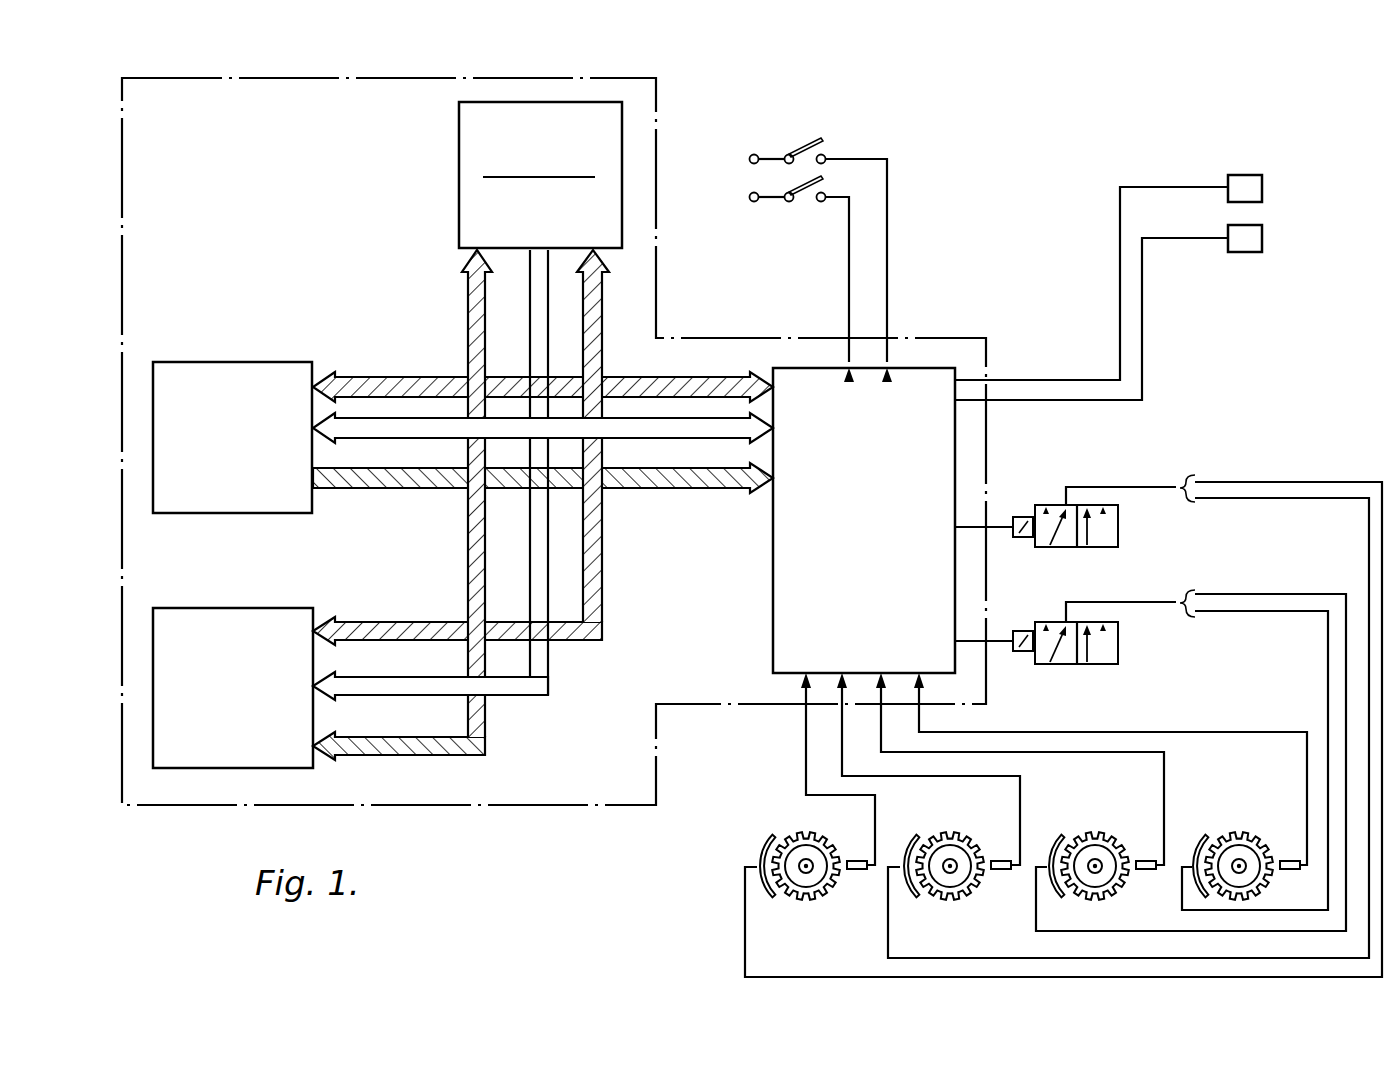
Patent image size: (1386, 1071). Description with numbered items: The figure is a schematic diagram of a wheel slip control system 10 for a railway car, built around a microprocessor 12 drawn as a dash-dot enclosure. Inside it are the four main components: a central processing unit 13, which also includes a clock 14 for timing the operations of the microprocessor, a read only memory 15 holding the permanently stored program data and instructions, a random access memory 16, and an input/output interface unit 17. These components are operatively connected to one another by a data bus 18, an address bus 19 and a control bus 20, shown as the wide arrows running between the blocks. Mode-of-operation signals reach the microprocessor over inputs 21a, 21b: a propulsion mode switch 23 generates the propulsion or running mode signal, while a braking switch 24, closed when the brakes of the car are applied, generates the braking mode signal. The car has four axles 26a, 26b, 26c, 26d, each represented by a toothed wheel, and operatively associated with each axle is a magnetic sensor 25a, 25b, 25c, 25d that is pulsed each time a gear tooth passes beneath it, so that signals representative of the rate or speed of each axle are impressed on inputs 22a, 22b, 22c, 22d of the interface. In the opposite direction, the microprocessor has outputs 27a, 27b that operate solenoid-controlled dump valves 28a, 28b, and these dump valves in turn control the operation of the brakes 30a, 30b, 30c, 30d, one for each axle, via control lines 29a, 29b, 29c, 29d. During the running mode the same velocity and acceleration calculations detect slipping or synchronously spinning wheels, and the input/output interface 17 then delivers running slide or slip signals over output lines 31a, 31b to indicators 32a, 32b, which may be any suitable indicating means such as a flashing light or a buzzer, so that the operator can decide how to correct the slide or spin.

The wheel slip control system 10 is at (92, 229).
The microprocessor 12 is at (657, 218).
The central processing unit 13 is at (530, 173).
The clock 14 is at (530, 239).
The read only memory 15 is at (222, 455).
The random access memory 16 is at (222, 715).
The input/output interface unit 17 is at (852, 505).
The data bus 18 is at (467, 296).
The address bus 19 is at (530, 296).
The control bus 20 is at (603, 287).
The input 21a is at (846, 356).
The input 21b is at (889, 352).
The input 22a is at (806, 725).
The input 22b is at (842, 747).
The input 22c is at (881, 740).
The input 22d is at (920, 714).
The propulsion mode switch 23 is at (809, 143).
The braking switch 24 is at (805, 200).
The magnetic sensor 25a is at (857, 872).
The magnetic sensor 25b is at (1003, 872).
The magnetic sensor 25c is at (1145, 872).
The magnetic sensor 25d is at (1293, 872).
The axle 26a is at (812, 843).
The axle 26b is at (970, 840).
The axle 26c is at (1110, 840).
The axle 26d is at (1255, 840).
The output 27a is at (1000, 518).
The output 27b is at (997, 641).
The solenoid-controlled dump valve 28a is at (1118, 540).
The solenoid-controlled dump valve 28b is at (1118, 653).
The control line 29a is at (1264, 482).
The control line 29b is at (1253, 500).
The control line 29c is at (1272, 595).
The control line 29d is at (1253, 614).
The brake 30a is at (767, 842).
The brake 30b is at (910, 840).
The brake 30c is at (1054, 845).
The brake 30d is at (1198, 845).
The output line 31a is at (1188, 188).
The output line 31b is at (1179, 238).
The indicator 32a is at (1262, 183).
The indicator 32b is at (1262, 243).